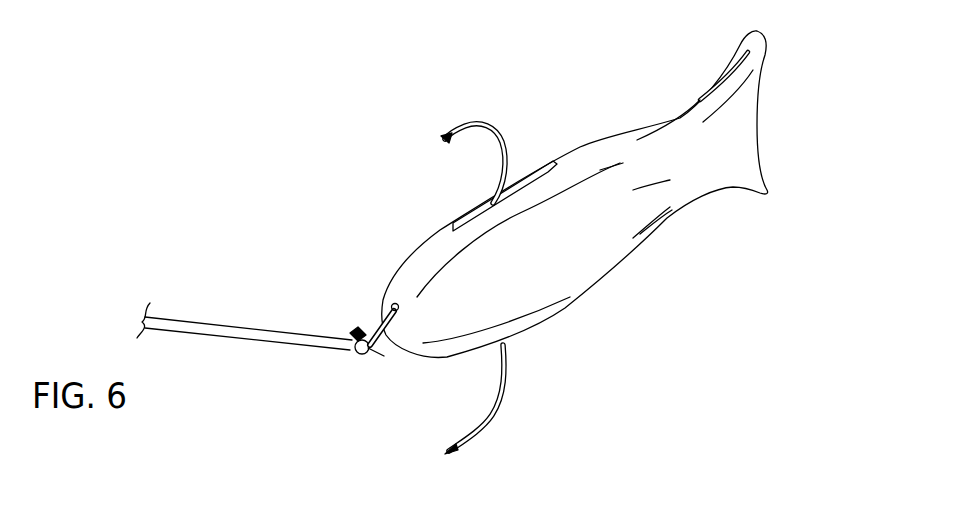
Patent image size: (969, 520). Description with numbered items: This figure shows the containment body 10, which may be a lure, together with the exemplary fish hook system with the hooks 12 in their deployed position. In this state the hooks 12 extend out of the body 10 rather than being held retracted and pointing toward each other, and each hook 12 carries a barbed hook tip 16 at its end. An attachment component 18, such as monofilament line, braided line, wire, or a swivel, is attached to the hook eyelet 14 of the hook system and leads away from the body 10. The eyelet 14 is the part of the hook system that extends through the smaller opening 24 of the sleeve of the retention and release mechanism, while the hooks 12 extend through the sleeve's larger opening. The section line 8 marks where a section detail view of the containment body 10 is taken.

The containment body 10 is at (582, 148).
The hooks 12 is at (498, 133).
The hook eyelet 14 is at (367, 330).
The barbed hook tip 16 is at (452, 141).
The attachment component 18 is at (283, 333).
The smaller opening 24 is at (383, 352).
The section line 8- 8 is at (522, 224).